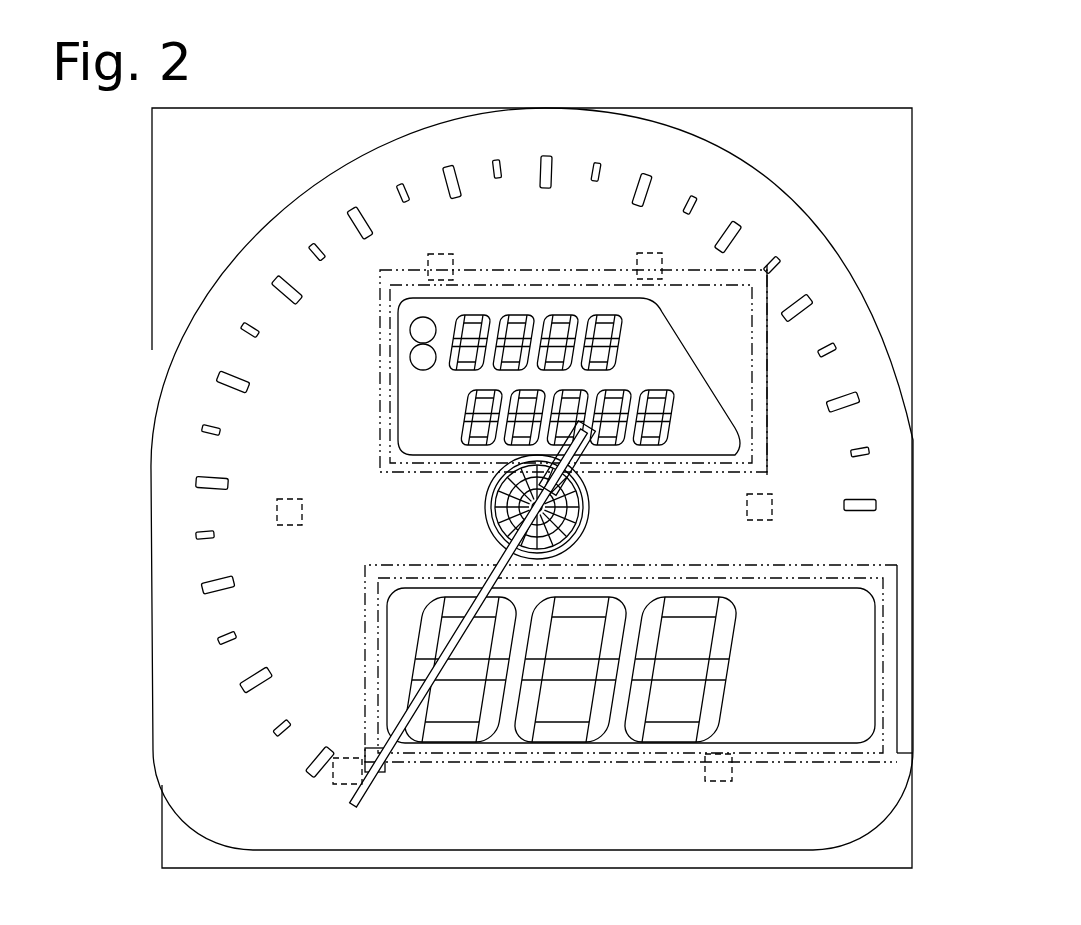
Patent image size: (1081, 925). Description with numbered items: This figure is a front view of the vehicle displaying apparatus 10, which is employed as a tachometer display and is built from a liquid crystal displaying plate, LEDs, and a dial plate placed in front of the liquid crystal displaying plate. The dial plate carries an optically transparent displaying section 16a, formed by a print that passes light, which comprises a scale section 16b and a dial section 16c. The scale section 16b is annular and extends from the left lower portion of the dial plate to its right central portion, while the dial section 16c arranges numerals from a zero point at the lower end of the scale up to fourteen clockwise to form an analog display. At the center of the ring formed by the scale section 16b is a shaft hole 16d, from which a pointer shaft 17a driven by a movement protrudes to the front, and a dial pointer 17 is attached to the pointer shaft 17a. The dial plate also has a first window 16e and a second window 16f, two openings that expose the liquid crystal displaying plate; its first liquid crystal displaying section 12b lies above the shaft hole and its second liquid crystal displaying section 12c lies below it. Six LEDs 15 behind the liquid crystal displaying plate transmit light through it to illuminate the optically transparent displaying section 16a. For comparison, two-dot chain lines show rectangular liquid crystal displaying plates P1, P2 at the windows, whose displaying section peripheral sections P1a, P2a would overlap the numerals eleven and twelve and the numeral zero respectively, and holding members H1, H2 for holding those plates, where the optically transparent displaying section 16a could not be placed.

The displaying apparatus 10 is at (999, 193).
The first liquid crystal displaying section 12b is at (630, 322).
The second liquid crystal displaying section 12c is at (737, 640).
The LED 15 is at (455, 264).
The optically transparent displaying section 16a is at (635, 467).
The scale section 16b is at (808, 312).
The dial section 16c is at (780, 335).
The shaft hole 16d is at (588, 523).
The first window 16e is at (745, 445).
The second window 16f is at (877, 706).
The dial pointer 17 is at (524, 628).
The pointer shaft 17a is at (588, 492).
The holding member H1 is at (762, 268).
The holding member H2 is at (913, 752).
The liquid crystal displaying plate P1 is at (755, 287).
The displaying section peripheral section P1a is at (740, 314).
The liquid crystal displaying plate P2 is at (898, 577).
The displaying section peripheral section P2a is at (305, 762).